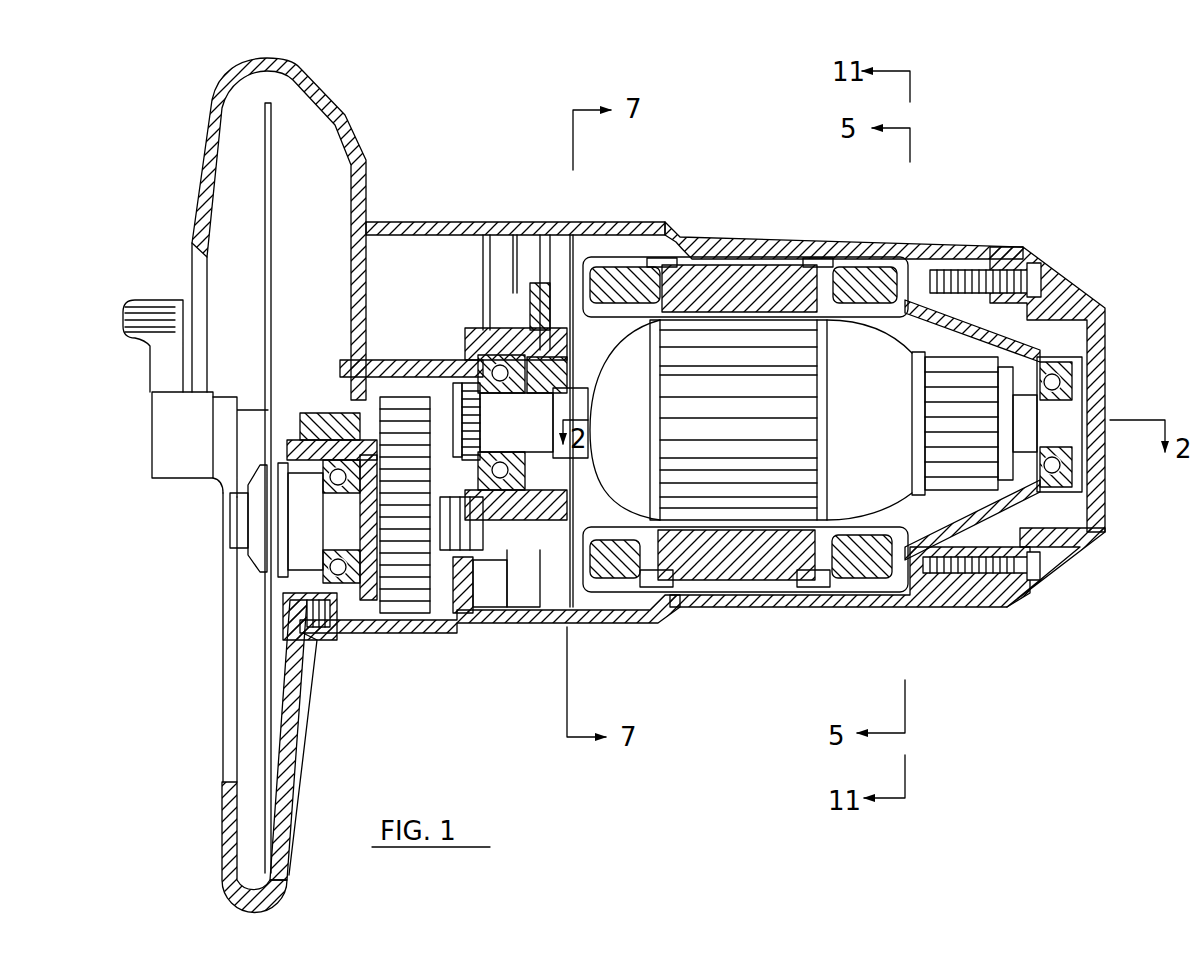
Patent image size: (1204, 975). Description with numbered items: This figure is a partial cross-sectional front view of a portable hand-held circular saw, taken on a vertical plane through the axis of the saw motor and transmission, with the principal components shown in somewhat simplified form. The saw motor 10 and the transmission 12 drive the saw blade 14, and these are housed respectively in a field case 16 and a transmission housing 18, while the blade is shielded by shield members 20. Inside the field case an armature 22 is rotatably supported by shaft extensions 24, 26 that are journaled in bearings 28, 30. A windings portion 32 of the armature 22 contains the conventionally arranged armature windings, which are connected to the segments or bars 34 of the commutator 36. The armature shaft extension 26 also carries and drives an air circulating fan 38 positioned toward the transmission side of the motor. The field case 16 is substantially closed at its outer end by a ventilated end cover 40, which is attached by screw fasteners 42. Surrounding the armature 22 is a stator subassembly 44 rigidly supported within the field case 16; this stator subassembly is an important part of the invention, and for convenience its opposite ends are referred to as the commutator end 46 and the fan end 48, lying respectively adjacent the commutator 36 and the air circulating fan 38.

The saw motor 10 is at (899, 616).
The transmission 12 is at (472, 631).
The saw blade 14 is at (276, 237).
The field case 16 is at (785, 237).
The transmission housing 18 is at (560, 213).
The shield members 20 is at (380, 139).
The armature 22 is at (897, 342).
The shaft extension 24 is at (1035, 347).
The shaft extension 26 is at (583, 386).
The bearing 28 is at (1062, 381).
The bearing 30 is at (478, 345).
The windings portion 32 is at (870, 501).
The segments or bars 34 is at (1093, 533).
The commutator 36 is at (959, 502).
The air circulating fan 38 is at (513, 268).
The ventilated end cover 40 is at (1105, 340).
The screw fasteners 42 is at (1045, 283).
The stator subassembly 44 is at (722, 589).
The commutator end 46 is at (901, 263).
The fan end 48 is at (605, 247).